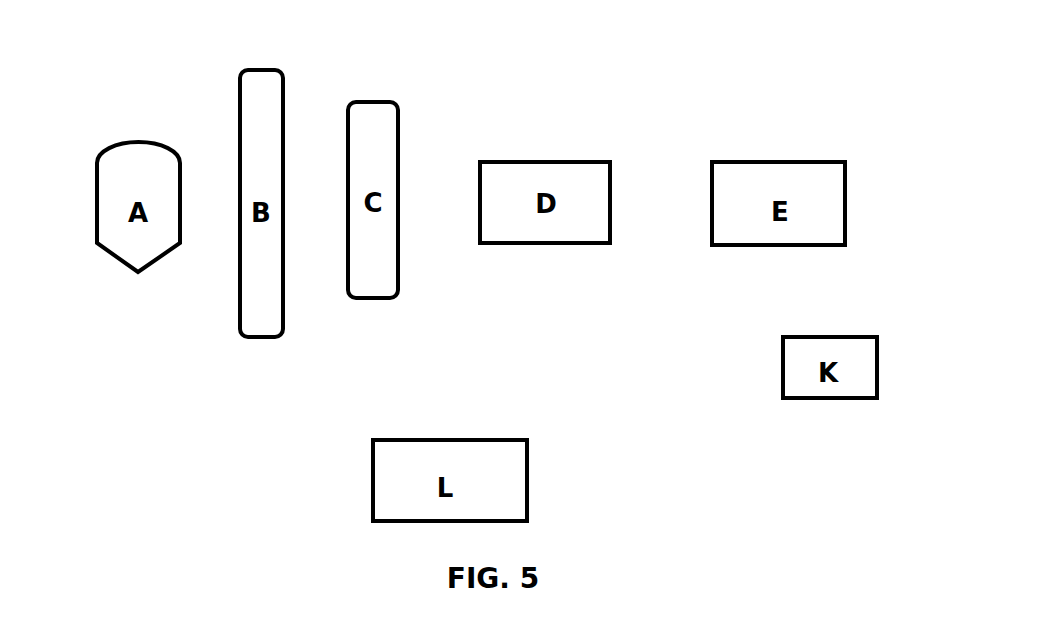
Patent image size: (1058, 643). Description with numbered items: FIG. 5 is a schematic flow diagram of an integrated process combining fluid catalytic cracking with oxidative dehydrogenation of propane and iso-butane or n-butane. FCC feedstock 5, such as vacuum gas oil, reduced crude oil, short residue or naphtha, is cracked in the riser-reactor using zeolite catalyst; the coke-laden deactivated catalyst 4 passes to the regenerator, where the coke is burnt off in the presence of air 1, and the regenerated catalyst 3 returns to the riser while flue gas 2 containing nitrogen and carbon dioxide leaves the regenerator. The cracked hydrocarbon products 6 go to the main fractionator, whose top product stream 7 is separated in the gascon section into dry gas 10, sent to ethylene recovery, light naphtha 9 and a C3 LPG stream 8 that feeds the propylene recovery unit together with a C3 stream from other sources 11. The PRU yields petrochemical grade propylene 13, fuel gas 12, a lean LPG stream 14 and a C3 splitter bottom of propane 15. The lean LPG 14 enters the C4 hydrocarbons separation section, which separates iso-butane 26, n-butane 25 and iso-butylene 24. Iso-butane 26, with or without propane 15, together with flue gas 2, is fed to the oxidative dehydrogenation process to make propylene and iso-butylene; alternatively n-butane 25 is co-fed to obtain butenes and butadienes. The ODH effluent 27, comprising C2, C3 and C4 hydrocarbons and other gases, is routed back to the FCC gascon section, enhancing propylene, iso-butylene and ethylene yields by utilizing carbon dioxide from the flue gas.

The air 1 is at (138, 274).
The flue gas 2 is at (36, 478).
The regenerated catalyst 3 is at (170, 255).
The deactivated catalyst 4 is at (182, 178).
The FCC feedstock 5 is at (261, 339).
The cracked hydrocarbon products 6 is at (346, 197).
The product stream 7 is at (478, 203).
The C3 LPG stream 8 is at (710, 203).
The light naphtha 9 is at (548, 243).
The dry gas 10 is at (876, 40).
The C3 stream from other sources 11 is at (681, 201).
The fuel gas 12 is at (775, 162).
The petrochemical grade propylene 13 is at (813, 162).
The lean LPG stream 14 is at (824, 245).
The propane 15 is at (529, 460).
The iso-butylene 24 is at (877, 351).
The n-butane 25 is at (529, 509).
The iso-butane 26 is at (529, 490).
The effluent 27 is at (446, 205).